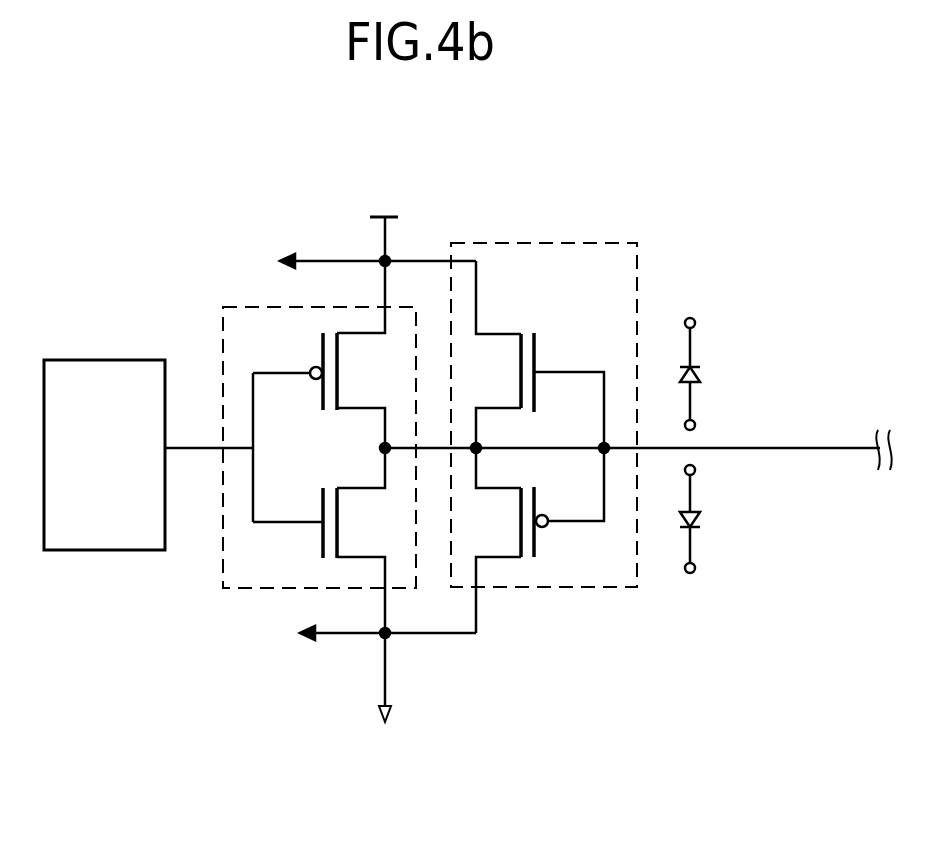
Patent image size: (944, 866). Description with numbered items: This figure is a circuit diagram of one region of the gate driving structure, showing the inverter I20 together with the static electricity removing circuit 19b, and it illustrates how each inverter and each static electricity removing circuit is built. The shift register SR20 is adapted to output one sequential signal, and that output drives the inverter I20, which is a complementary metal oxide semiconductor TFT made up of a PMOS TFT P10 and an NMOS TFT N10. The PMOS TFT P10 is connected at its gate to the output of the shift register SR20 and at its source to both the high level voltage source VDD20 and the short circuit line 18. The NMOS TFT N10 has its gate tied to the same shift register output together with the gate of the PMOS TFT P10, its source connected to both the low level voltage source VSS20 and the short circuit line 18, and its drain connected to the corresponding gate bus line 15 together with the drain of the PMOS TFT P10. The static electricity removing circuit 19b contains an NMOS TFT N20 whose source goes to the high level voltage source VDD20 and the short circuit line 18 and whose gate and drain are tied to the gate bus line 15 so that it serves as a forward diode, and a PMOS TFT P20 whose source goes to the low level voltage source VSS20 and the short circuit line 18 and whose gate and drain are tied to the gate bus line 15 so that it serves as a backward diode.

The gate bus line 15 is at (805, 447).
The short circuit line 18 is at (359, 450).
The static electricity removing circuit 19b is at (530, 262).
The PMOS TFT P10 is at (310, 358).
The NMOS TFT N10 is at (318, 538).
The NMOS TFT N20 is at (548, 350).
The PMOS TFT P20 is at (536, 538).
The inverter I20 is at (233, 337).
The shift register SR20 is at (148, 455).
The high level voltage source VDD20 is at (382, 201).
The low level voltage source VSS20 is at (381, 696).